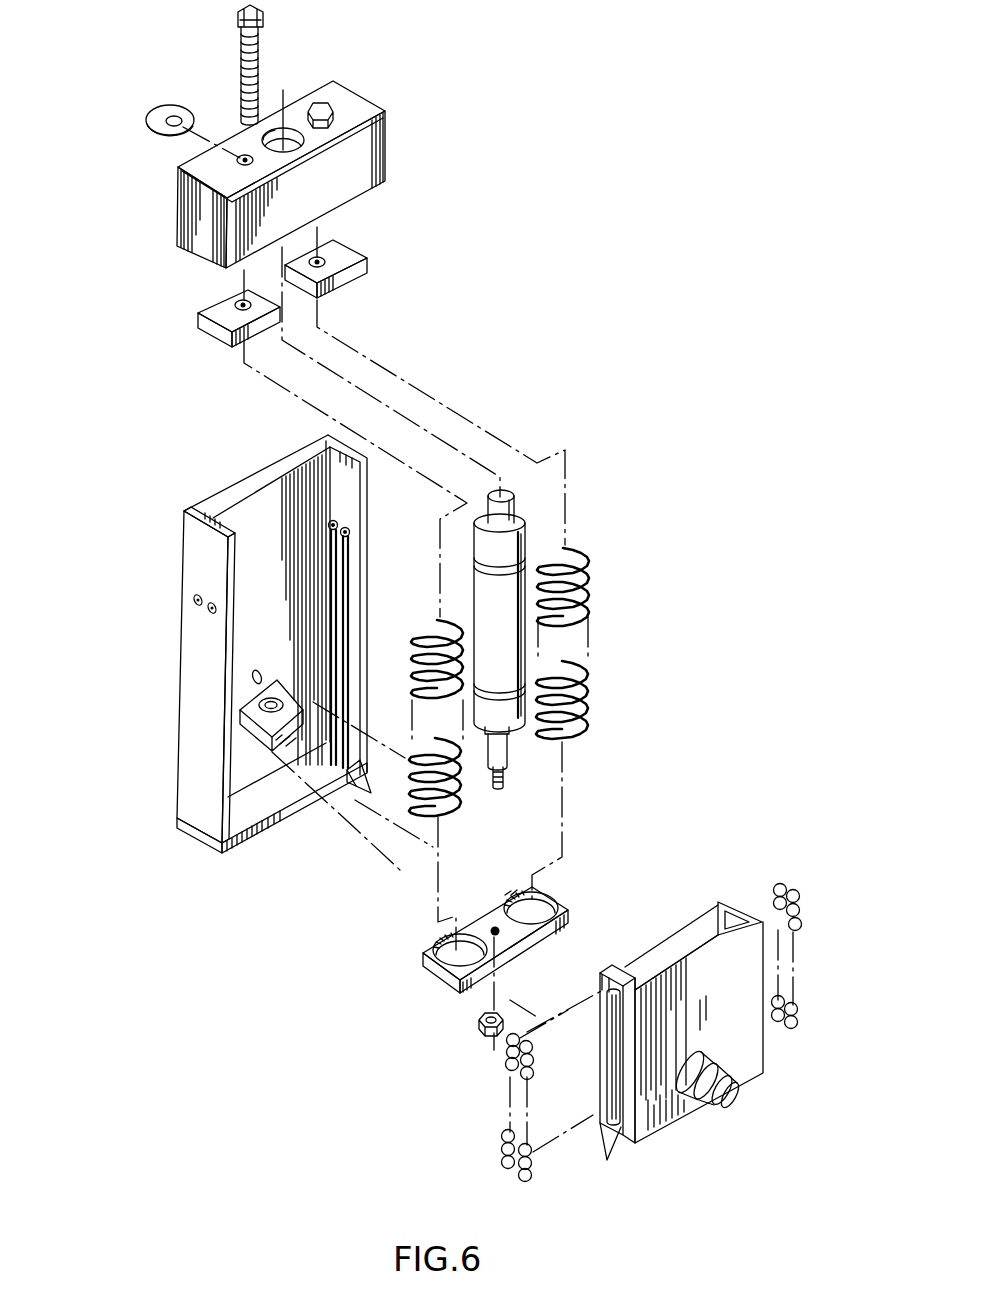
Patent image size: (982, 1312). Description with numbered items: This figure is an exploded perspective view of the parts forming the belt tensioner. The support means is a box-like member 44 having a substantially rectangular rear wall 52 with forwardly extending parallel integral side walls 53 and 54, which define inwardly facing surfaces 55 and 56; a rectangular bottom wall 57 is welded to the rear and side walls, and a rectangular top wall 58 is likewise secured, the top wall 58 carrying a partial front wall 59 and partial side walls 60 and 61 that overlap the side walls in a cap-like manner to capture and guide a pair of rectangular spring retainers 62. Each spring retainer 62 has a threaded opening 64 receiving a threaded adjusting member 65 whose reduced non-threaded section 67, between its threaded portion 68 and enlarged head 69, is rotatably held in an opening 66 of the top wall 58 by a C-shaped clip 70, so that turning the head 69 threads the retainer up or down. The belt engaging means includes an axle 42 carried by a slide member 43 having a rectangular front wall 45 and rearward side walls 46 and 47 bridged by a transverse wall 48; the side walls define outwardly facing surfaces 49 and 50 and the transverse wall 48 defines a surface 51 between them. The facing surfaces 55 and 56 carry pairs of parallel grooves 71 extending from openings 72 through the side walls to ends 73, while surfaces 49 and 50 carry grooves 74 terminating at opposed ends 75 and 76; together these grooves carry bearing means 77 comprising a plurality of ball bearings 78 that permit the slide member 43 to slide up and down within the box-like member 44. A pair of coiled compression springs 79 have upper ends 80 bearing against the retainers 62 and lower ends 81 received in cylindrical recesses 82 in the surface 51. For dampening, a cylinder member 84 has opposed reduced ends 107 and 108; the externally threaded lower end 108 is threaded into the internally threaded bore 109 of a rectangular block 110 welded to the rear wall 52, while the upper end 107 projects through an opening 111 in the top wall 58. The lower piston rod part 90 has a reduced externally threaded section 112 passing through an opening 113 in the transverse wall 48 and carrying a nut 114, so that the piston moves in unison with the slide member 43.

The axle 42 is at (697, 1098).
The slide member 43 is at (740, 1030).
The box-like member 44 is at (268, 641).
The front wall 45 is at (745, 1058).
The side wall 46 is at (600, 974).
The side wall 47 is at (737, 900).
The transverse wall 48 is at (527, 888).
The outwardly facing surface 49 is at (606, 988).
The outwardly facing surface 50 is at (747, 905).
The surface 51 is at (473, 925).
The rear wall 52 is at (253, 495).
The side wall 53 is at (190, 562).
The side wall 54 is at (369, 500).
The inwardly facing surface 55 is at (217, 510).
The inwardly facing surface 56 is at (333, 465).
The bottom wall 57 is at (268, 800).
The top wall 58 is at (357, 97).
The partial front wall 59 is at (368, 163).
The partial side wall 60 is at (193, 232).
The partial side wall 61 is at (387, 133).
The spring retainer 62 is at (217, 307).
The threaded opening 64 is at (243, 305).
The threaded adjusting member 65 is at (240, 50).
The opening 66 is at (243, 156).
The reduced non-threaded section 67 is at (259, 35).
The threaded portion 68 is at (257, 63).
The enlarged head 69 is at (237, 14).
The C-shaped clip 70 is at (155, 118).
The groove 71 is at (340, 580).
The opening 72 is at (348, 532).
The end 73 is at (366, 785).
The groove 74 is at (618, 1087).
The end 75 is at (612, 990).
The end 76 is at (609, 1157).
The bearing means 77 is at (812, 950).
The ball bearing 78 is at (800, 912).
The coiled compression spring 79 is at (412, 693).
The upper end 80 is at (437, 620).
The lower end 81 is at (447, 816).
The cylindrical recess 82 is at (548, 896).
The cylinder member 84 is at (530, 533).
The lower part of piston rod 90 is at (508, 750).
The upper reduced end 107 is at (514, 503).
The lower reduced end 108 is at (485, 729).
The internally threaded bore 109 is at (266, 700).
The block 110 is at (257, 722).
The opening 111 is at (281, 137).
The reduced externally threaded section 112 is at (503, 777).
The opening 113 is at (499, 931).
The nut 114 is at (478, 1027).